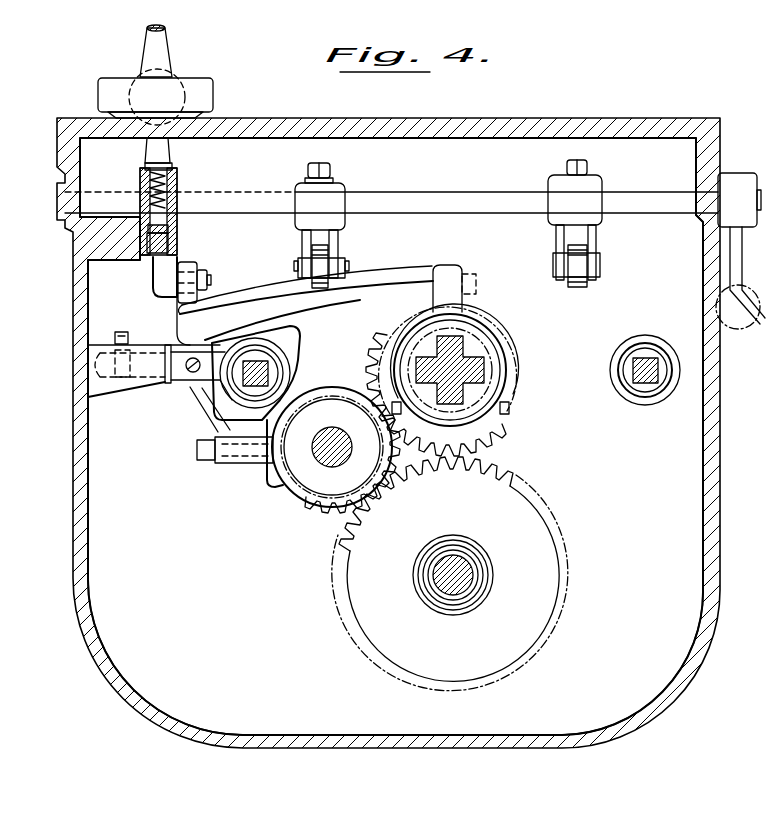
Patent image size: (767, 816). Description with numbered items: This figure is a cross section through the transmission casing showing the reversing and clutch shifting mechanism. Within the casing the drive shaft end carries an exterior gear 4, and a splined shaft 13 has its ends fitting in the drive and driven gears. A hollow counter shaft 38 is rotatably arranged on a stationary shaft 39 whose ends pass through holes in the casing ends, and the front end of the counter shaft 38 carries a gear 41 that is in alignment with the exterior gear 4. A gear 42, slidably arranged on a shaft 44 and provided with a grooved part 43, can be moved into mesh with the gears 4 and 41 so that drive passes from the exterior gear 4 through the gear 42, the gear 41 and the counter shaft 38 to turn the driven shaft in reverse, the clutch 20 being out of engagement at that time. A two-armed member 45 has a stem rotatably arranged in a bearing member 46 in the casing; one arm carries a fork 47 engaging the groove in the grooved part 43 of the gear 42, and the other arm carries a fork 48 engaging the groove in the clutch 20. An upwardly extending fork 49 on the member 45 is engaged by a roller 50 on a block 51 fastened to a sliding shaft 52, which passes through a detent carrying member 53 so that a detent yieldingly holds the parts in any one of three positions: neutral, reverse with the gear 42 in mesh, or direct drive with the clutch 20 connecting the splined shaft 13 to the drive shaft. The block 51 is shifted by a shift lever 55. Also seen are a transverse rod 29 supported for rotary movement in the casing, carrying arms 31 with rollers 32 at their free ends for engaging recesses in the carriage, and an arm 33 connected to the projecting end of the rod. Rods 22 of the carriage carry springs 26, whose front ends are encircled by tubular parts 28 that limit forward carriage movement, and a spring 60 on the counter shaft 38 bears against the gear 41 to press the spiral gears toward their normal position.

The exterior gear 4 is at (372, 356).
The splined shaft 13 is at (470, 365).
The clutch 20 is at (505, 432).
The rods 22 is at (645, 385).
The springs 26 is at (632, 350).
The tubular parts 28 is at (665, 343).
The transverse rod 29 is at (405, 200).
The arms 31 is at (322, 268).
The rollers 32 is at (328, 258).
The arm 33 is at (740, 272).
The counter shaft 38 is at (453, 598).
The stationary shaft 39 is at (453, 545).
The gear 41 is at (530, 520).
The gear 42 is at (318, 512).
The grooved part 43 is at (290, 490).
The shaft 44 is at (338, 430).
The two-armed member 45 is at (283, 313).
The bearing member 46 is at (122, 388).
The fork 47 is at (325, 375).
The fork 48 is at (465, 300).
The fork 49 is at (196, 262).
The roller 50 is at (209, 277).
The block 51 is at (160, 280).
The sliding shaft 52 is at (168, 240).
The detent carrying member 53 is at (172, 188).
The shift lever 55 is at (160, 48).
The spring 60 is at (492, 582).